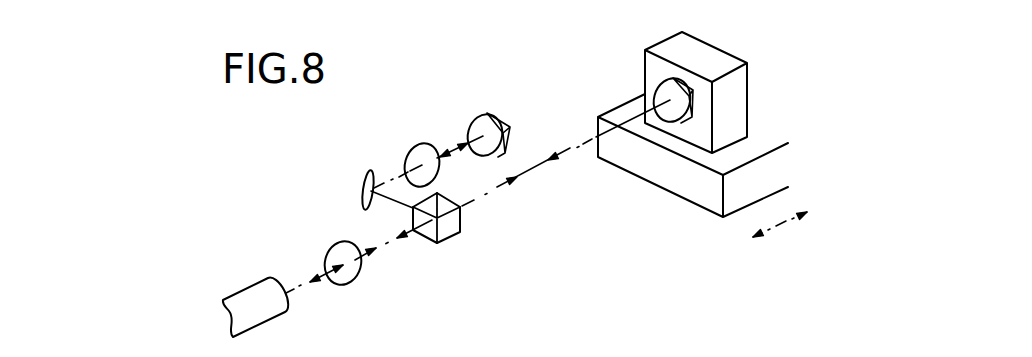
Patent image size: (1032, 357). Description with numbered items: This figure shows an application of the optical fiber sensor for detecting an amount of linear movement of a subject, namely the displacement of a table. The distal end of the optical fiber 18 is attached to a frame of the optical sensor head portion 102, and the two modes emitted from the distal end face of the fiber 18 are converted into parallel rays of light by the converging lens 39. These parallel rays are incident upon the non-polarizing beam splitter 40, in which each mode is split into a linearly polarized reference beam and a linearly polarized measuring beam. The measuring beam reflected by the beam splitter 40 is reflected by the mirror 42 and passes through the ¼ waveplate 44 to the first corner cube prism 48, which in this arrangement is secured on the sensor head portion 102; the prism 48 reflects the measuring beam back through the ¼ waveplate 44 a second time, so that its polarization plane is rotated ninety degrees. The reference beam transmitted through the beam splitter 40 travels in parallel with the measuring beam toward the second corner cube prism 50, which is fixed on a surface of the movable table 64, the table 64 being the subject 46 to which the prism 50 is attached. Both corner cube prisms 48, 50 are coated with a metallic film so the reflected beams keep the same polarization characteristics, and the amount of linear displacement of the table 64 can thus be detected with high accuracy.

The optical fiber 18 is at (243, 297).
The converging lens 39 is at (335, 250).
The non-polarizing beam splitter 40 is at (447, 232).
The mirror 42 is at (364, 185).
The ¼ waveplate 44 is at (412, 152).
The subject 46 is at (712, 62).
The first corner cube prism 48 is at (473, 122).
The second corner cube prism 50 is at (662, 92).
The movable table 64 is at (692, 188).
The optical sensor head portion 102 is at (534, 253).